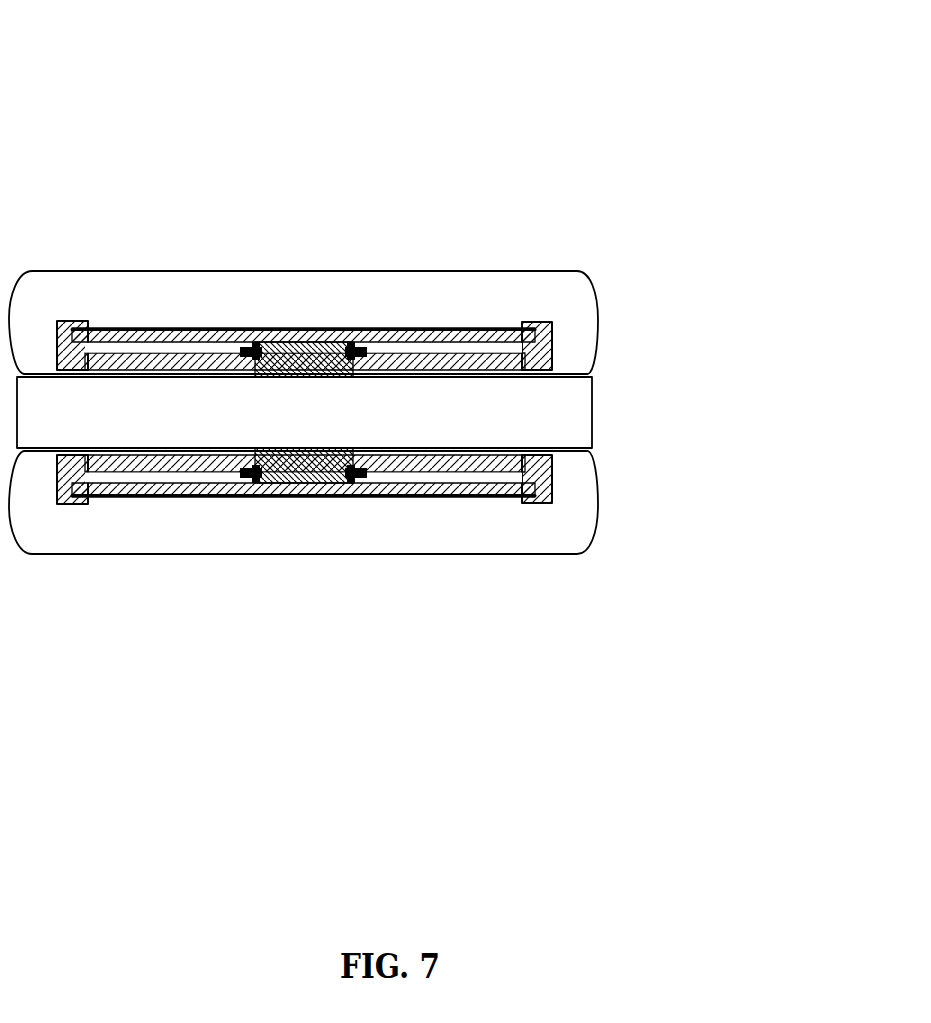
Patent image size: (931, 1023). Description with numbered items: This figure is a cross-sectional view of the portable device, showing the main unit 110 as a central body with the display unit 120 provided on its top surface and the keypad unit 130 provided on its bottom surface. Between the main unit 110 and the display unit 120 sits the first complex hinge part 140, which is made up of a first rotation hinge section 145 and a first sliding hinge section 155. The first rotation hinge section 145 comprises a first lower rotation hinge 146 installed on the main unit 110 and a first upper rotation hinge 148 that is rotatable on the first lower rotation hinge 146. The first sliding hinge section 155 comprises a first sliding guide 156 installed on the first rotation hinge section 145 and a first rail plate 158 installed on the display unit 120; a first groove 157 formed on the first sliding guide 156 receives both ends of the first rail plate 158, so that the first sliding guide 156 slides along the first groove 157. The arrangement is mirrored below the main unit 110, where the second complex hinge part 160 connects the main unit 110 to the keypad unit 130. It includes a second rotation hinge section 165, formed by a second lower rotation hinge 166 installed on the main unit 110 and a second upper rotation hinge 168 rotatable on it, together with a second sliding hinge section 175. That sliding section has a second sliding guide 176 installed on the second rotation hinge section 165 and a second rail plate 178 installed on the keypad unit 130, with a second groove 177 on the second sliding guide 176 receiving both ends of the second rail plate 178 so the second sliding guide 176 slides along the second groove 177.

The main unit 110 is at (592, 413).
The display unit 120 is at (594, 292).
The keypad unit 130 is at (598, 490).
The first complex hinge part 140 is at (307, 215).
The first rotation hinge section 145 is at (281, 254).
The first lower rotation hinge 146 is at (310, 355).
The first upper rotation hinge 148 is at (250, 348).
The first sliding hinge section 155 is at (307, 232).
The first sliding guide 156 is at (463, 358).
The first groove 157 is at (518, 330).
The first rail plate 158 is at (382, 262).
The second complex hinge part 160 is at (306, 608).
The second rotation hinge section 165 is at (280, 570).
The second lower rotation hinge 166 is at (310, 470).
The second upper rotation hinge 168 is at (250, 478).
The second sliding hinge section 175 is at (306, 592).
The second sliding guide 176 is at (463, 467).
The second groove 177 is at (517, 497).
The second rail plate 178 is at (381, 564).